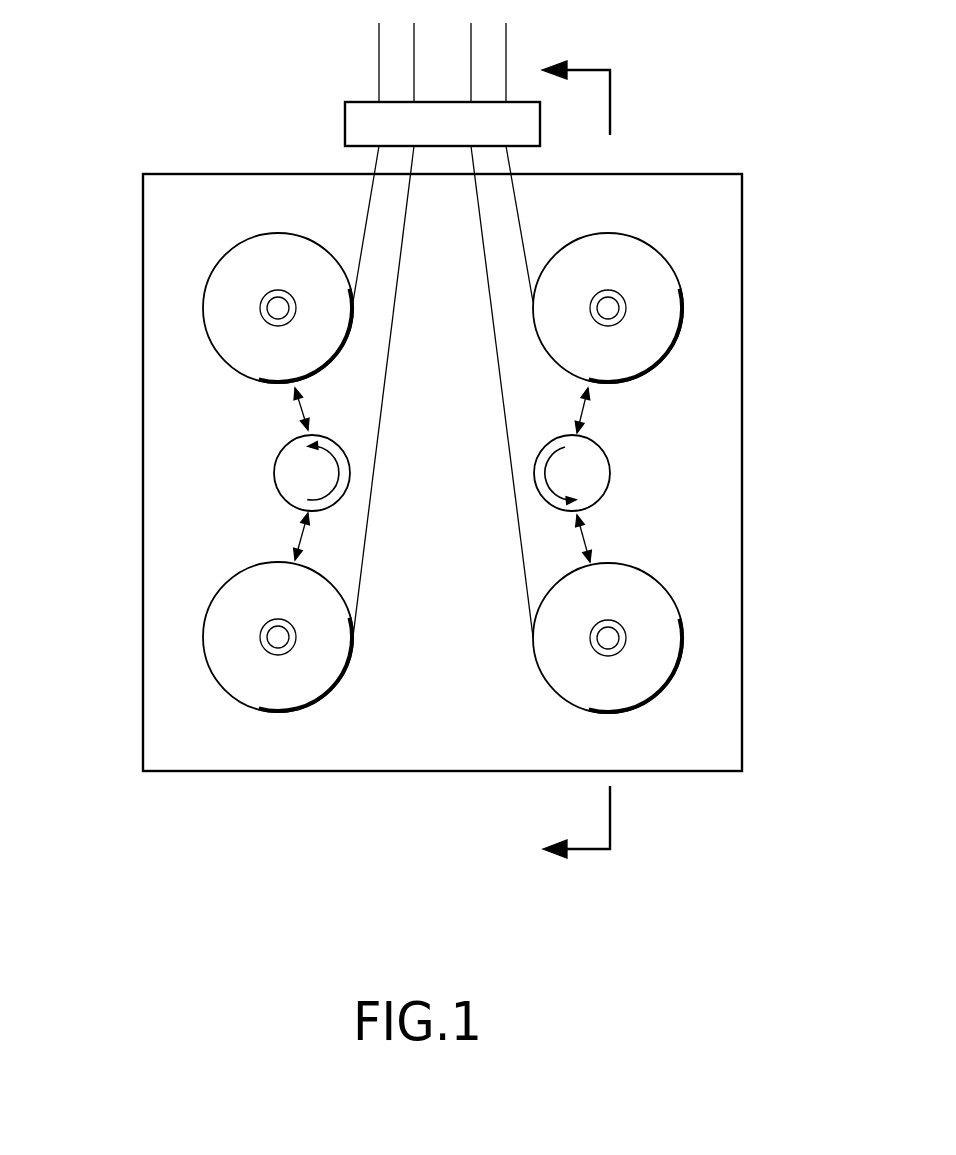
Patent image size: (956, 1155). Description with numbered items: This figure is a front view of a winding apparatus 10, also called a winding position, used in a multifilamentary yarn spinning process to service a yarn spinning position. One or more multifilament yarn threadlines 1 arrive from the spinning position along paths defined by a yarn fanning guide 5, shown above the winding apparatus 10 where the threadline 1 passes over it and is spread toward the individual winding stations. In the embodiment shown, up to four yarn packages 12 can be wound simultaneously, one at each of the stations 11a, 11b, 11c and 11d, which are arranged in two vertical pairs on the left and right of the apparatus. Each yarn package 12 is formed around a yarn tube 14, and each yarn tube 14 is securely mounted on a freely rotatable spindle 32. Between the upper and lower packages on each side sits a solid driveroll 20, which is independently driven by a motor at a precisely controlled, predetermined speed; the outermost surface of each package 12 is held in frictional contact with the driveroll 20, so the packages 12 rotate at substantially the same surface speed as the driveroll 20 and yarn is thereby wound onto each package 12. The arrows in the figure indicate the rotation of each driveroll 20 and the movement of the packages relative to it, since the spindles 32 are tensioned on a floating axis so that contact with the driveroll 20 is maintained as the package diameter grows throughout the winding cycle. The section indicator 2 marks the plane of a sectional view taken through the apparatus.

The yarn threadline 1 is at (512, 163).
The section line 2- 2 is at (564, 461).
The yarn fanning guide 5 is at (367, 107).
The winding apparatus 10 is at (738, 795).
The station 11a is at (278, 291).
The station 11b is at (278, 655).
The station 11c is at (608, 291).
The station 11d is at (608, 657).
The yarn package 12 is at (444, 474).
The yarn tube 14 is at (266, 316).
The driveroll 20 is at (275, 473).
The spindle 32 is at (263, 304).